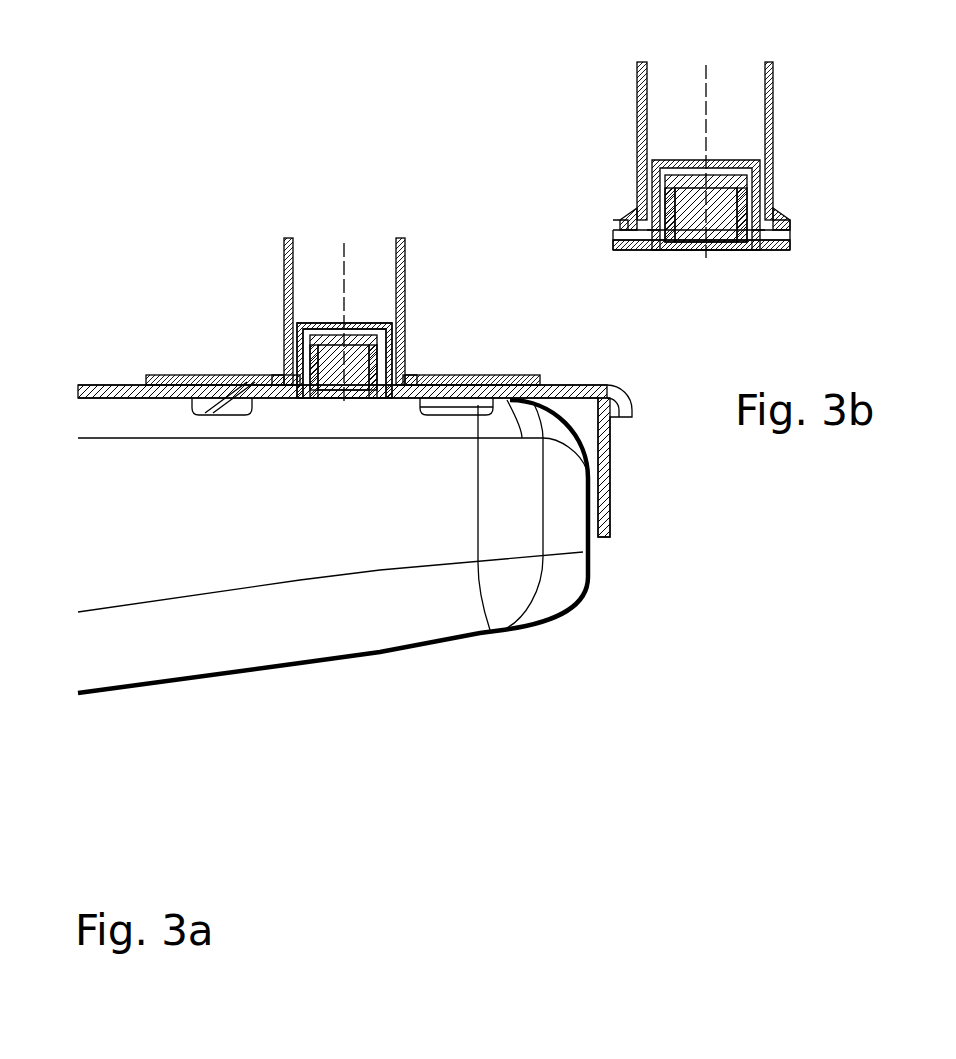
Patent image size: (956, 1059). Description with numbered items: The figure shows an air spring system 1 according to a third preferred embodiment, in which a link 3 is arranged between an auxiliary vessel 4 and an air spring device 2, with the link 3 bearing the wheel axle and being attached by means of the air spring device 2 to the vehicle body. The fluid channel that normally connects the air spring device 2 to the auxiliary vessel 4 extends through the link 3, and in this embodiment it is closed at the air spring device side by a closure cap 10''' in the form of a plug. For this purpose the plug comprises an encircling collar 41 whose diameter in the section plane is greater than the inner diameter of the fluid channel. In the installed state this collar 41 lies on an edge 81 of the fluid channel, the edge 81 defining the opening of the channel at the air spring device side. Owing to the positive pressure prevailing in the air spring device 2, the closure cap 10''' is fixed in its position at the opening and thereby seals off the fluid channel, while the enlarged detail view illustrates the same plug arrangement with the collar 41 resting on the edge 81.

In FIG. 3A, the air spring system 1 is at (178, 160).
In FIG. 3A, the air spring device 2 is at (502, 373).
In FIG. 3B, the air spring device 2 is at (637, 95).
In FIG. 3A, the link 3 is at (625, 393).
In FIG. 3A, the auxiliary vessel 4 is at (565, 578).
In FIG. 3A, the encircling collar 41 is at (383, 333).
In FIG. 3A, the edge 81 is at (386, 365).
In FIG. 3B, the edge 81 is at (762, 168).
In FIG. 3A, the closure cap 10''' is at (368, 268).
In FIG. 3B, the closure cap 10''' is at (732, 211).